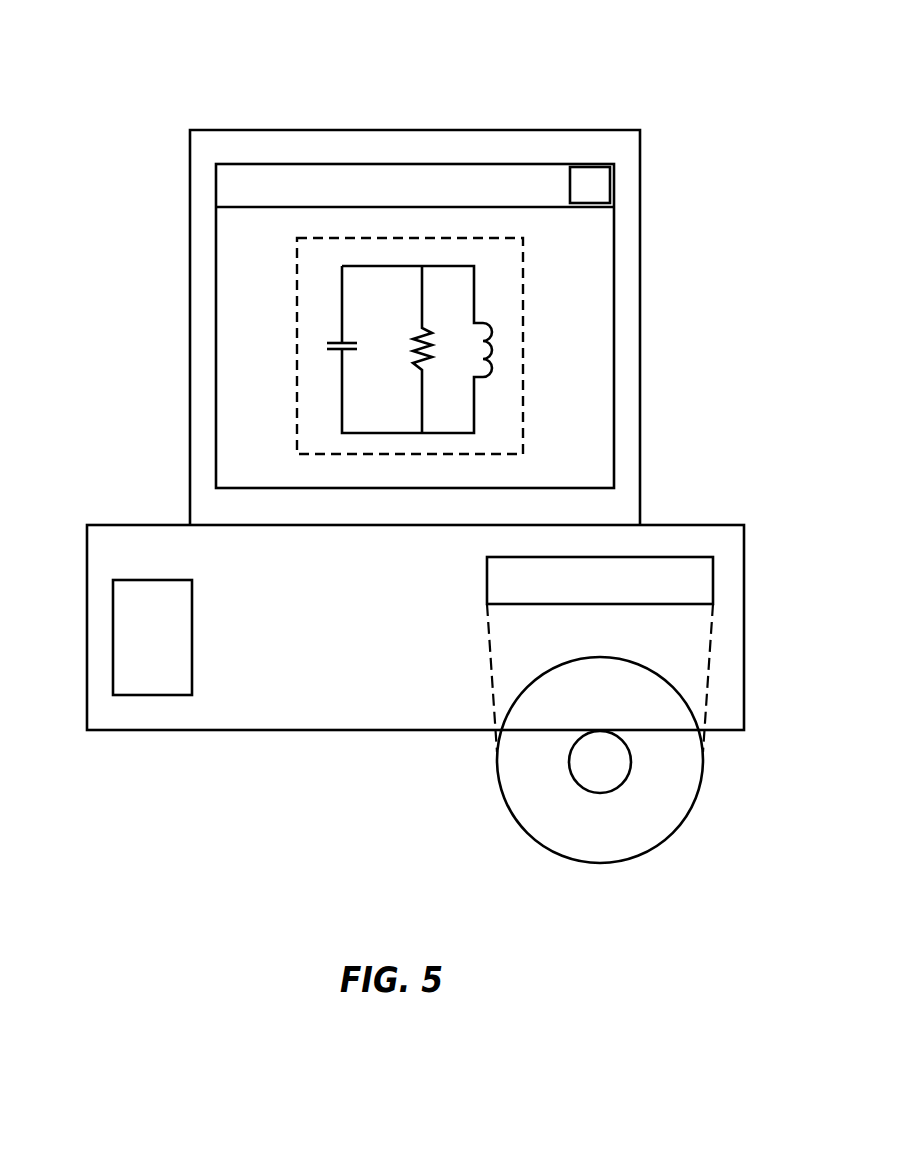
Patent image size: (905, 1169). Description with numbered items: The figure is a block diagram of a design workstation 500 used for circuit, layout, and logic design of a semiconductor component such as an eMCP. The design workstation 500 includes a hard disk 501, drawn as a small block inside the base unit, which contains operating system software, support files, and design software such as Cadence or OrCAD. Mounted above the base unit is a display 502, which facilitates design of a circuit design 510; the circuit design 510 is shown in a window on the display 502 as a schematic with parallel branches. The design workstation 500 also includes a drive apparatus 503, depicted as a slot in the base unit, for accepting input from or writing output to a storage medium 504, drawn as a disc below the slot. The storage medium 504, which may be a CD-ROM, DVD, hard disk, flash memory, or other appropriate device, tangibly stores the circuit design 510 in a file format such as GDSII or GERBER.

The design workstation 500 is at (137, 76).
The hard disk 501 is at (192, 606).
The display 502 is at (592, 130).
The drive apparatus 503 is at (700, 556).
The storage medium 504 is at (598, 863).
The circuit design 510 is at (523, 268).